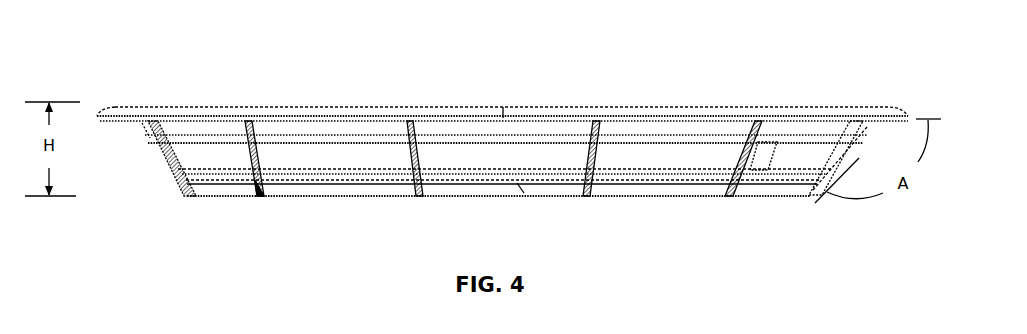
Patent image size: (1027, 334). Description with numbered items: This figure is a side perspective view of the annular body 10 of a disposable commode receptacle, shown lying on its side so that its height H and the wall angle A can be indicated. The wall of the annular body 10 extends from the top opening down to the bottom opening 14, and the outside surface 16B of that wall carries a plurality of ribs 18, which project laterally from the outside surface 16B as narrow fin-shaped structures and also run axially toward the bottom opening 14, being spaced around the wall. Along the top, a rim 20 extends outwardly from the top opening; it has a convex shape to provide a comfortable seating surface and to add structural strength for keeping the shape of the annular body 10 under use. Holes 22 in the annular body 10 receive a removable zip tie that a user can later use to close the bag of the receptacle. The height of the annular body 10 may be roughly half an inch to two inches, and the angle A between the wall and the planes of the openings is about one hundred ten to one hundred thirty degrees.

The annular body 10 is at (491, 133).
The bottom opening 14 is at (611, 200).
The outside surface 16B is at (355, 158).
The ribs 18 is at (257, 175).
The rim 20 is at (784, 107).
The holes 22 is at (762, 168).